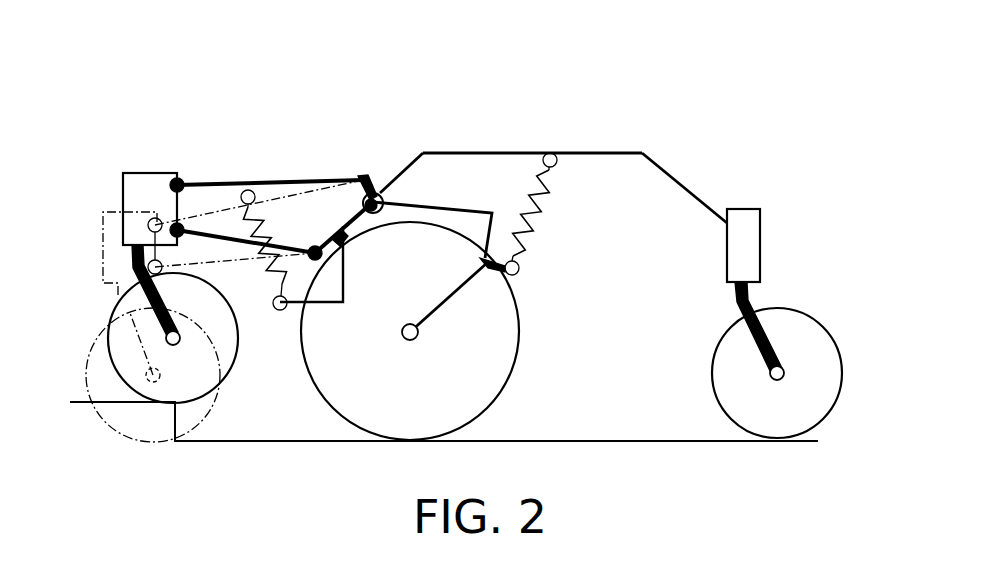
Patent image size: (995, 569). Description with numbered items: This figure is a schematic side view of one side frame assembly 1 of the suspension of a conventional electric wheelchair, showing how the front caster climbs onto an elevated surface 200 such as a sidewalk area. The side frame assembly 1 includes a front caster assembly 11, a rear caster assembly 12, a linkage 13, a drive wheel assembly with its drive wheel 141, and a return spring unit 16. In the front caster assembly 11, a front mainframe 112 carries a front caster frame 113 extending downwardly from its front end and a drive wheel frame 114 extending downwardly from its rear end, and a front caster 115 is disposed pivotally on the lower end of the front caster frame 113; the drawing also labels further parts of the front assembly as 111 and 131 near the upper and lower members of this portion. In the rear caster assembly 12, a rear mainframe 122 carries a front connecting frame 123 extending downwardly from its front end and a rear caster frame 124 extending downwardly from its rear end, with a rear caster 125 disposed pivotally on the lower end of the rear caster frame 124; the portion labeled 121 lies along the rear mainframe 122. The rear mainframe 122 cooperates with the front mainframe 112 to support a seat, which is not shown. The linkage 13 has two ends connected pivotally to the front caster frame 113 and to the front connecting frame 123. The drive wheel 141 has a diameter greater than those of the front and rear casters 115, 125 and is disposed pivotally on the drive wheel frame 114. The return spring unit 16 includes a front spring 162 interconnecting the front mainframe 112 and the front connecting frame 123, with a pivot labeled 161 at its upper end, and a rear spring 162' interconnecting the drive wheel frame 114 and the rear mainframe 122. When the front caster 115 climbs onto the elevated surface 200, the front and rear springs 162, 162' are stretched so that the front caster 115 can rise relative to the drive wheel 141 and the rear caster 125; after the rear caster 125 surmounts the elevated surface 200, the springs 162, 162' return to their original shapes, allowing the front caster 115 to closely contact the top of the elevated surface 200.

The side frame assembly 1 is at (437, 135).
The front caster assembly 11 is at (335, 168).
The rear caster assembly 12 is at (658, 150).
The linkage 13 is at (286, 318).
The return spring unit 16 is at (176, 212).
The upper link 111 is at (283, 171).
The front mainframe 112 is at (368, 185).
The front caster frame 113 is at (123, 222).
The drive wheel frame 114 is at (483, 228).
The front caster 115 is at (103, 362).
The top tube 121 is at (583, 150).
The rear mainframe 122 is at (482, 153).
The front connecting frame 123 is at (345, 272).
The rear caster frame 124 is at (762, 226).
The rear caster 125 is at (820, 323).
The lower link 131 is at (238, 245).
The drive wheel 141 is at (517, 356).
The spring pivot 161 is at (280, 233).
The front spring 162 is at (222, 221).
The rear spring 162' is at (571, 214).
The elevated surface 200 is at (180, 415).